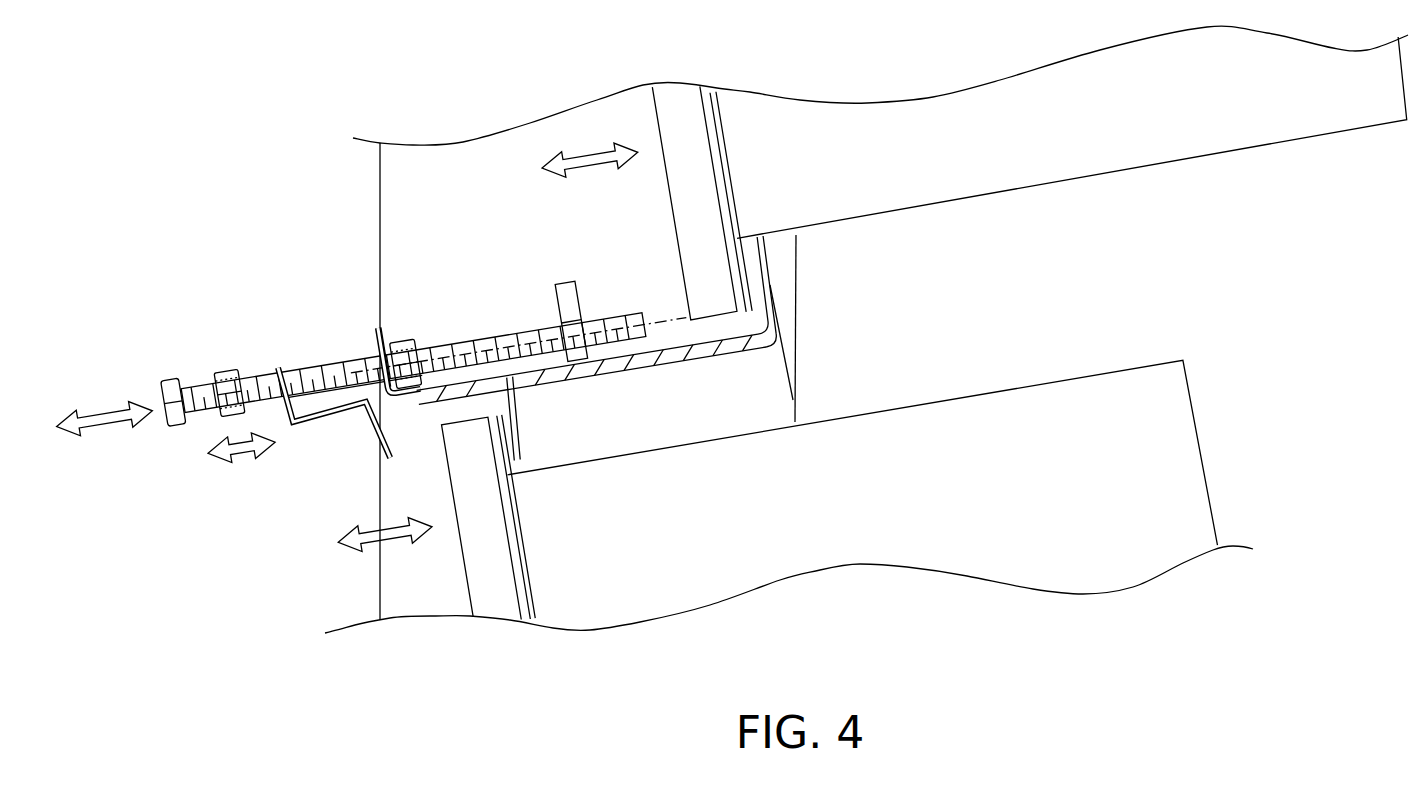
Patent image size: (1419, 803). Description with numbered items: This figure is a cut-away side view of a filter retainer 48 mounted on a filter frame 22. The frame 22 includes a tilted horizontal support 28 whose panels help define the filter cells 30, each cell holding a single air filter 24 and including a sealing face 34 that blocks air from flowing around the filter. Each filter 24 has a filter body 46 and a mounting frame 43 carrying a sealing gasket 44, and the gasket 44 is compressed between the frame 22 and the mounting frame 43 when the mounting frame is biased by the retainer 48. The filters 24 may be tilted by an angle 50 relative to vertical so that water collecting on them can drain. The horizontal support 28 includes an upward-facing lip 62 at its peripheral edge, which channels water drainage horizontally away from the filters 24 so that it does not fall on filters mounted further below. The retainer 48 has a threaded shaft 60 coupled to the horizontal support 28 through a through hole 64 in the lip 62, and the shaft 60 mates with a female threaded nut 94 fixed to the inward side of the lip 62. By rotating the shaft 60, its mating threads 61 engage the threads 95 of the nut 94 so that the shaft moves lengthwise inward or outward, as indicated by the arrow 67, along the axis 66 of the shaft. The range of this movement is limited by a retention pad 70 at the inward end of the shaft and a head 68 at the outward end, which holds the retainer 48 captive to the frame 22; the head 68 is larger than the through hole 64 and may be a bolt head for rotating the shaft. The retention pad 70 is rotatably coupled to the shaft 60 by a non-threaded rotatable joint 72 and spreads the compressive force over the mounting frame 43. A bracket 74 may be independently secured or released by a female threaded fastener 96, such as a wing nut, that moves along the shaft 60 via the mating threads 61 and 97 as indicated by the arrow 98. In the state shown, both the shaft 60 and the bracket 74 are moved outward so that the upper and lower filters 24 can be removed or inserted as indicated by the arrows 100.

The filter frame 22 is at (797, 358).
The air filter 24 is at (620, 117).
The tilted horizontal support 28 is at (647, 360).
The filter cell 30 is at (878, 311).
The sealing face 34 is at (765, 313).
The mounting frame 43 is at (681, 215).
The sealing gasket 44 is at (713, 140).
The filter body 46 is at (771, 178).
The filter retainer 48 is at (193, 530).
The angle 50 is at (778, 292).
The shaft 60 is at (197, 378).
The mating threads 61 is at (332, 383).
The lip 62 is at (388, 336).
The through hole 64 is at (381, 326).
The axis 66 is at (160, 410).
The arrow 67 is at (103, 430).
The head 68 is at (168, 423).
The retention pad 70 is at (567, 303).
The non-threaded rotatable joint 72 is at (573, 332).
The bracket 74 is at (308, 431).
The female threaded nut 94 is at (424, 343).
The mating threads 95 is at (413, 398).
The female threaded fastener 96 is at (232, 375).
The mating threads 97 is at (228, 423).
The arrow 98 is at (243, 456).
The arrows 100 is at (557, 178).